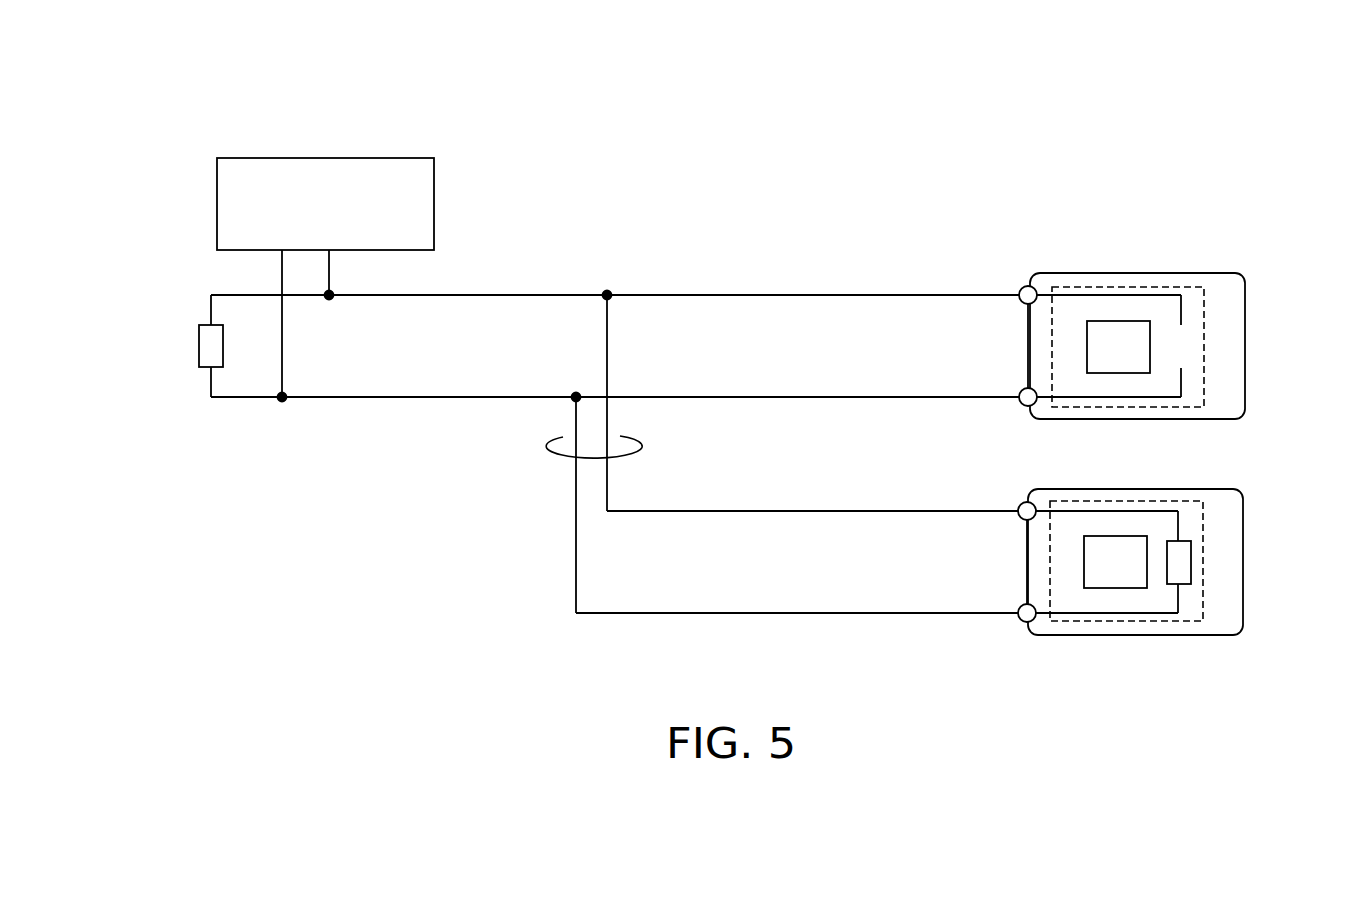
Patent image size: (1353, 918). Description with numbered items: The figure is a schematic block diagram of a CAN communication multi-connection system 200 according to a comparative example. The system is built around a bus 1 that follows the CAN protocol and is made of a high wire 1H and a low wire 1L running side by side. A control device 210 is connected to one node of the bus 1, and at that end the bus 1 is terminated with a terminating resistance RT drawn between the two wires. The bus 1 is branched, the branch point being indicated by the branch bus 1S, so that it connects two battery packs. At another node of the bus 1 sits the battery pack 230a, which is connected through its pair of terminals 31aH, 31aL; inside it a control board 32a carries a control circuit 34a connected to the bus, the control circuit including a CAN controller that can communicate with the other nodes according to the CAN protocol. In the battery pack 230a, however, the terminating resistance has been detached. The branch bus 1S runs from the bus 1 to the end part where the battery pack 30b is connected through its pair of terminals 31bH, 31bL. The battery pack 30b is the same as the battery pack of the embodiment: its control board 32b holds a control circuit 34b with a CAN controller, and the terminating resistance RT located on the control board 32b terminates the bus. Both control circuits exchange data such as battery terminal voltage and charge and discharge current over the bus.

The CAN communication system 200 is at (1071, 102).
The control device 210 is at (312, 158).
The terminating resistance RT is at (199, 343).
The bus 1 is at (909, 216).
The high wire 1H is at (817, 295).
The low wire 1L is at (880, 397).
The branch bus 1S is at (548, 452).
The battery pack 230a is at (1245, 295).
The terminal 31aH is at (1021, 289).
The terminal 31aL is at (1022, 404).
The control board 32a is at (1173, 287).
The control circuit 34a is at (1112, 321).
The second battery pack 30b is at (1243, 511).
The terminal 31bH is at (1020, 505).
The terminal 31bL is at (1020, 620).
The control board 32b is at (1170, 501).
The control circuit 34b is at (1110, 536).